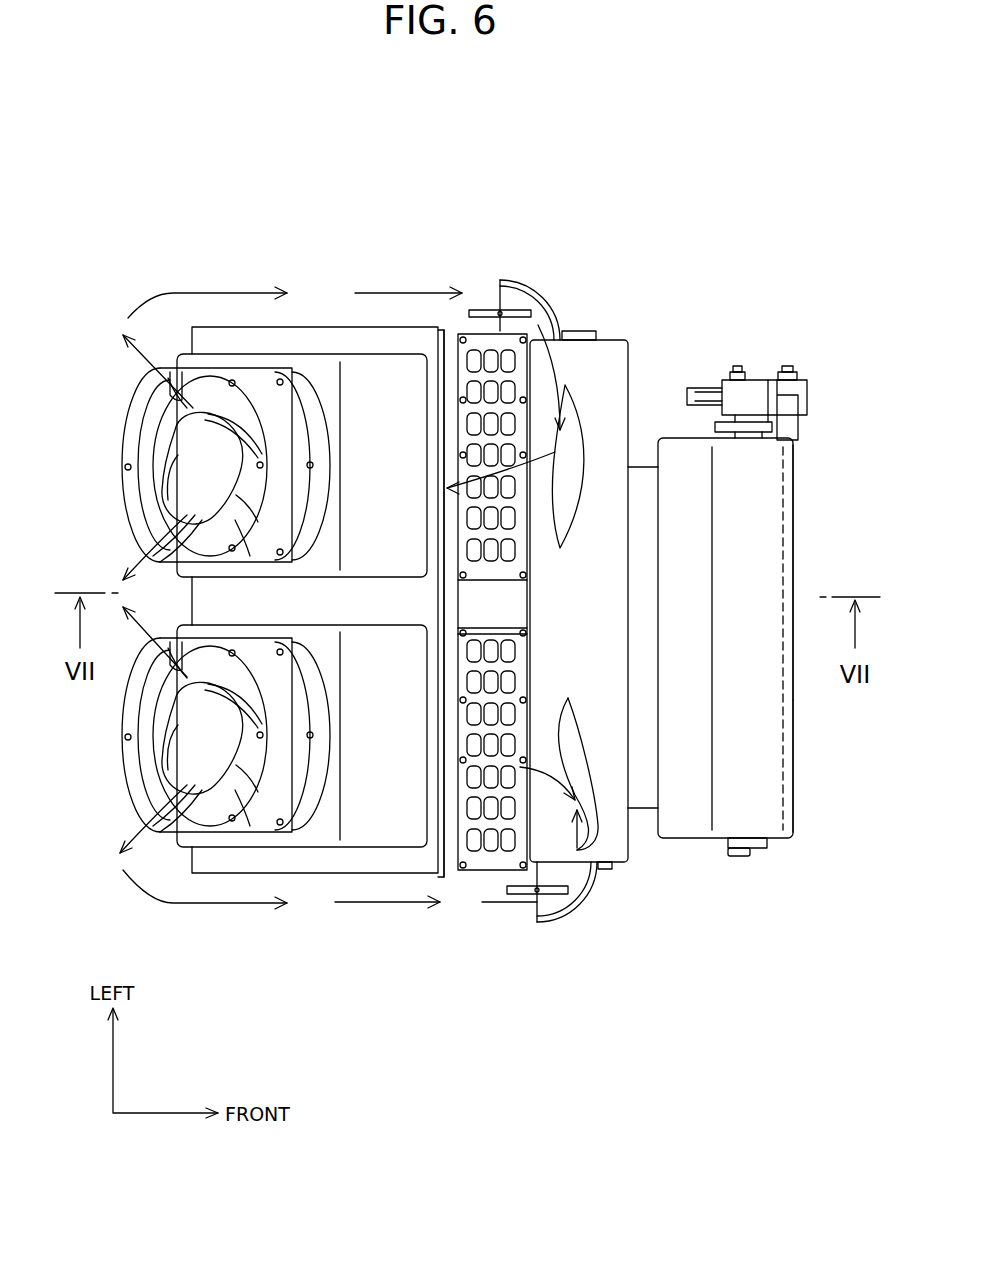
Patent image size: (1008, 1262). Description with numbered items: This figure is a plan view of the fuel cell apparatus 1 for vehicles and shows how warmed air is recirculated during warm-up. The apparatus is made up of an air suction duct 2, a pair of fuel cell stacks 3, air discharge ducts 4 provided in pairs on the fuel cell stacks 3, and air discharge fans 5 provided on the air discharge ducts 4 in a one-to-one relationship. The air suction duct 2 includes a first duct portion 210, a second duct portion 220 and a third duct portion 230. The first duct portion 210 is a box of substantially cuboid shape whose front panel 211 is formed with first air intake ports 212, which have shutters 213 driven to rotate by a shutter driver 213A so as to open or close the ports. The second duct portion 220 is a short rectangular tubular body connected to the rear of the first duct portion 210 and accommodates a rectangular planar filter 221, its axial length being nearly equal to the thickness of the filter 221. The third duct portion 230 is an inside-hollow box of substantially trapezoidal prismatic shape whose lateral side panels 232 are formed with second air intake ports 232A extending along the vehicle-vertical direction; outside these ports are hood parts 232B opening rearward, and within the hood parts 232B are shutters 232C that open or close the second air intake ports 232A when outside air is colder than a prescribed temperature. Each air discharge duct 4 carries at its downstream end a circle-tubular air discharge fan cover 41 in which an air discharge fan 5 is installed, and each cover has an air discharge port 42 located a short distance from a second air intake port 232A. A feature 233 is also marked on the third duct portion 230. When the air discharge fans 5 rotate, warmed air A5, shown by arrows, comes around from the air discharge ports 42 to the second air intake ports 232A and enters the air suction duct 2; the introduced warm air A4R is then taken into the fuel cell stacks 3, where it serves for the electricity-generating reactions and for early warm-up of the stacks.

The fuel cell apparatus for vehicles 1 is at (695, 157).
The air suction duct 2 is at (762, 597).
The fuel cell stack 3 is at (467, 880).
The air discharge duct 4 is at (380, 378).
The air discharge fan 5 is at (185, 498).
The air discharge fan cover 41 is at (282, 435).
The air discharge port 42 is at (140, 432).
The first duct portion 210 is at (713, 860).
The front panel 211 is at (794, 573).
The first air intake port 212 is at (790, 770).
The shutter 213 is at (784, 535).
The shutter driver 213A is at (758, 383).
The second duct portion 220 is at (643, 465).
The filter 221 is at (645, 497).
The third duct portion 230 is at (575, 587).
The lateral side panel 232 is at (604, 342).
The second air intake port 232A is at (526, 290).
The hood part 232B is at (536, 300).
The shutter 232C is at (496, 310).
The duct wall 233 is at (592, 378).
The air A5 is at (213, 292).
The warm air A4R is at (524, 587).